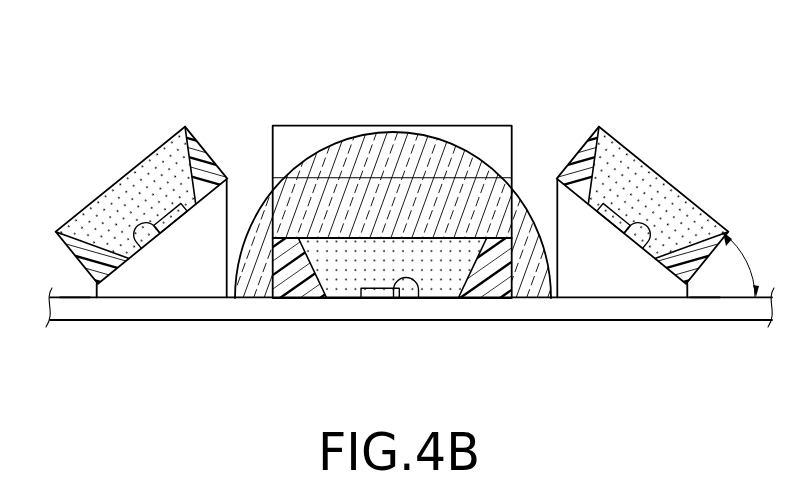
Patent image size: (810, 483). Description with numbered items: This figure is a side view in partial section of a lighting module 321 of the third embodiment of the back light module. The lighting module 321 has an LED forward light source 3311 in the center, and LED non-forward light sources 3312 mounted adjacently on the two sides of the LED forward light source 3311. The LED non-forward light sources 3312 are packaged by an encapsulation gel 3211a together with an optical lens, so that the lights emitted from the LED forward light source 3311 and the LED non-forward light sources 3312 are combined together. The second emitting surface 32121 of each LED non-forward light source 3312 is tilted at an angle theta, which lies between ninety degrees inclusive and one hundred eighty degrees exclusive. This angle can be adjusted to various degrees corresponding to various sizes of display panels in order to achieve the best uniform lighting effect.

The lighting module 321 is at (55, 64).
The second emitting surface 32121 is at (434, 238).
The encapsulation gel 3211a is at (482, 258).
The LED forward light source 3311 is at (545, 295).
The LED non-forward light source 3312 is at (76, 282).